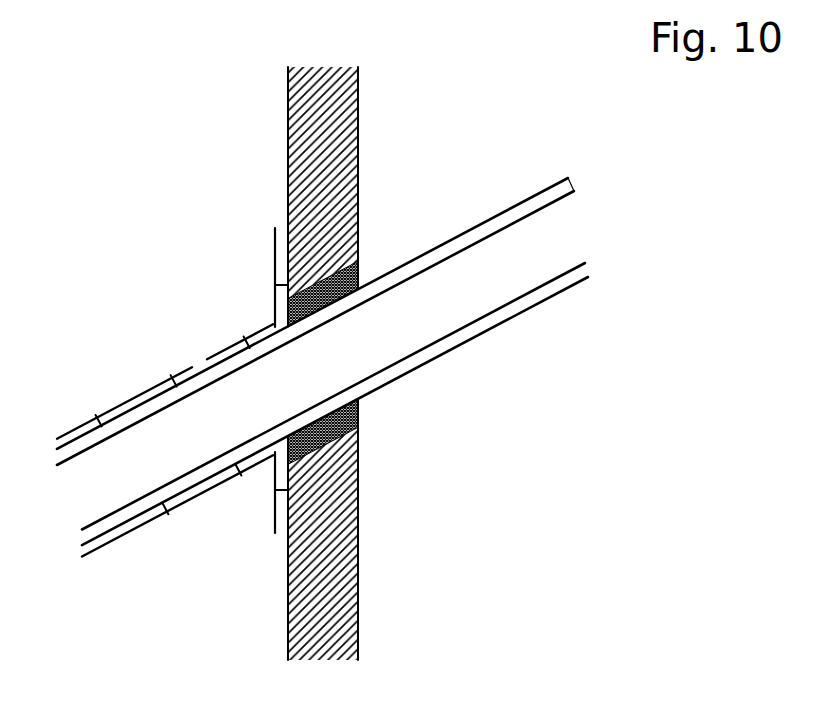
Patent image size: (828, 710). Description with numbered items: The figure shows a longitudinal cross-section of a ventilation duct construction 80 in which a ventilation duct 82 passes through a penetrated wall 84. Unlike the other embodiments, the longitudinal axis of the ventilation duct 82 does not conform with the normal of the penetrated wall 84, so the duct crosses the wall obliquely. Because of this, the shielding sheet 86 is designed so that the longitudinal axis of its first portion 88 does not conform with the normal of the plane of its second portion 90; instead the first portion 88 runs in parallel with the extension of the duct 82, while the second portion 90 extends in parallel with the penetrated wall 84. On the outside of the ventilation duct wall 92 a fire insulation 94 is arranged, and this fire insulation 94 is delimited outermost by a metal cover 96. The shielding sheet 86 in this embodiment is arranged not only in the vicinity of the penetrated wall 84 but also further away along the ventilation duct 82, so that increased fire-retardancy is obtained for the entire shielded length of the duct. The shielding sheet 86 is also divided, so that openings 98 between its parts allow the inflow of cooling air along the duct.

The ventilation duct construction 80 is at (128, 179).
The ventilation duct 82 is at (535, 257).
The penetrated wall 84 is at (357, 118).
The shielding sheet 86 is at (263, 325).
The first portion 88 is at (217, 352).
The second portion 90 is at (275, 253).
The ventilation duct wall 92 is at (560, 200).
The fire insulation 94 is at (552, 196).
The metal cover 96 is at (520, 204).
The openings 98 is at (198, 493).